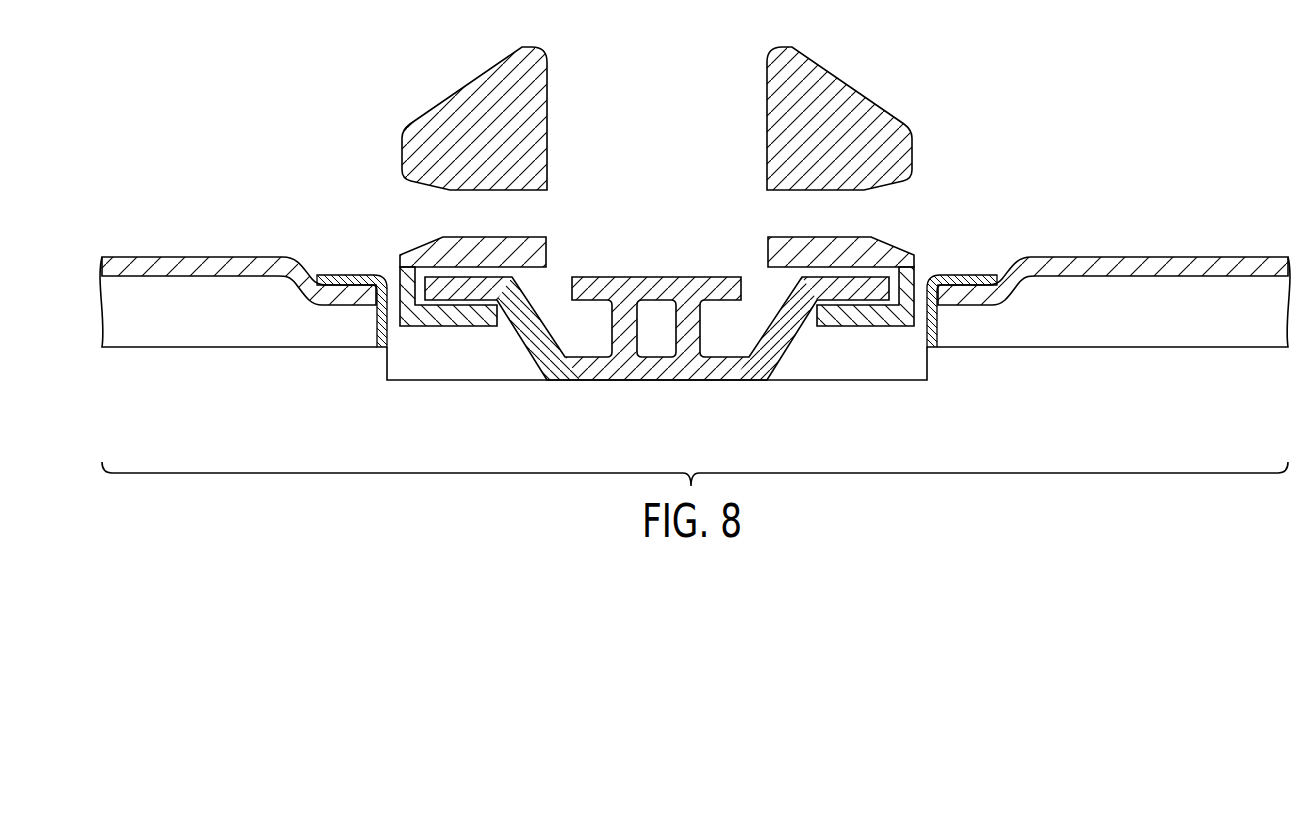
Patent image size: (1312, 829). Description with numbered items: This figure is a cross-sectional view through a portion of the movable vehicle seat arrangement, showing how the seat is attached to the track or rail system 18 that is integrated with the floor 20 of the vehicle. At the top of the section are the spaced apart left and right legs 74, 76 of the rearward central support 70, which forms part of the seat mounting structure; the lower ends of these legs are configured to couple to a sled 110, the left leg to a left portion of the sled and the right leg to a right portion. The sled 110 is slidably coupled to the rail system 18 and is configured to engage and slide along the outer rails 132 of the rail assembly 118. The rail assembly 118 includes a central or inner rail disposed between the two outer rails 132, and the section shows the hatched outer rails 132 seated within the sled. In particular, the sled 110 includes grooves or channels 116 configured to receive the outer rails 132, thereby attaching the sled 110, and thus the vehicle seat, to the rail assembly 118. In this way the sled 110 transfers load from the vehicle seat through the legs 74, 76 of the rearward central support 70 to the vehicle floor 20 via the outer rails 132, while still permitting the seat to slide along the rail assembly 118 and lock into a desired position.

The rail system 18 is at (658, 233).
The floor 20 is at (1144, 349).
The rearward central support 70 is at (926, 105).
The left leg 74 is at (456, 100).
The right leg 76 is at (816, 74).
The sled 110 is at (439, 242).
The grooves or channels 116 is at (422, 286).
The rail assembly 118 is at (640, 374).
The outer rails 132 is at (478, 288).